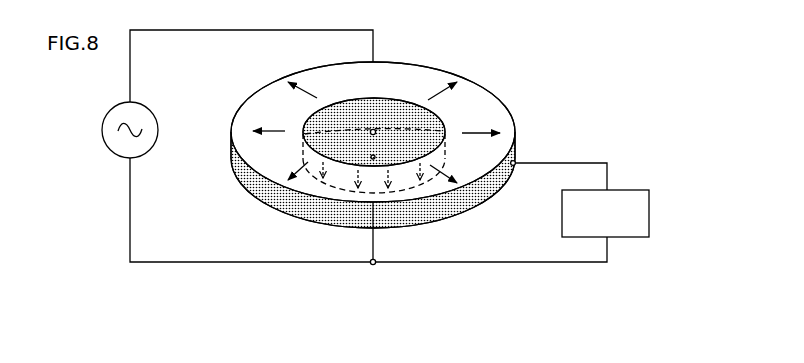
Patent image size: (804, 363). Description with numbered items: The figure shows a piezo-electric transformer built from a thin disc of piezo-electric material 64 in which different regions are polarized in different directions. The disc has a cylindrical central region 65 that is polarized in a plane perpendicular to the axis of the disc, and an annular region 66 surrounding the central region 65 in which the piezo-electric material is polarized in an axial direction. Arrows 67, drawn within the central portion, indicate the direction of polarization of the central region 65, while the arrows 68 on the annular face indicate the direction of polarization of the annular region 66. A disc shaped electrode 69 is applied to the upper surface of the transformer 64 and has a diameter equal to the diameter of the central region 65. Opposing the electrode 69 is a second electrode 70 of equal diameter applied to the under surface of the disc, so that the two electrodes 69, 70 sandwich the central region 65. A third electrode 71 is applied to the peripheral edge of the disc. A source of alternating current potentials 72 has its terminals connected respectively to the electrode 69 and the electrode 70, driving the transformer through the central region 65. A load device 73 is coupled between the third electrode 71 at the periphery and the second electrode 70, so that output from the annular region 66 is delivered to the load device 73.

The thin disc of piezo-electric material 64 is at (441, 48).
The central region 65 is at (338, 99).
The annular region 66 is at (512, 168).
The arrows 67 is at (412, 188).
The arrows 68 is at (443, 94).
The disc shaped electrode 69 is at (393, 105).
The second electrode 70 is at (347, 190).
The third electrode 71 is at (467, 205).
The source of alternating current potentials 72 is at (103, 124).
The load device 73 is at (643, 215).